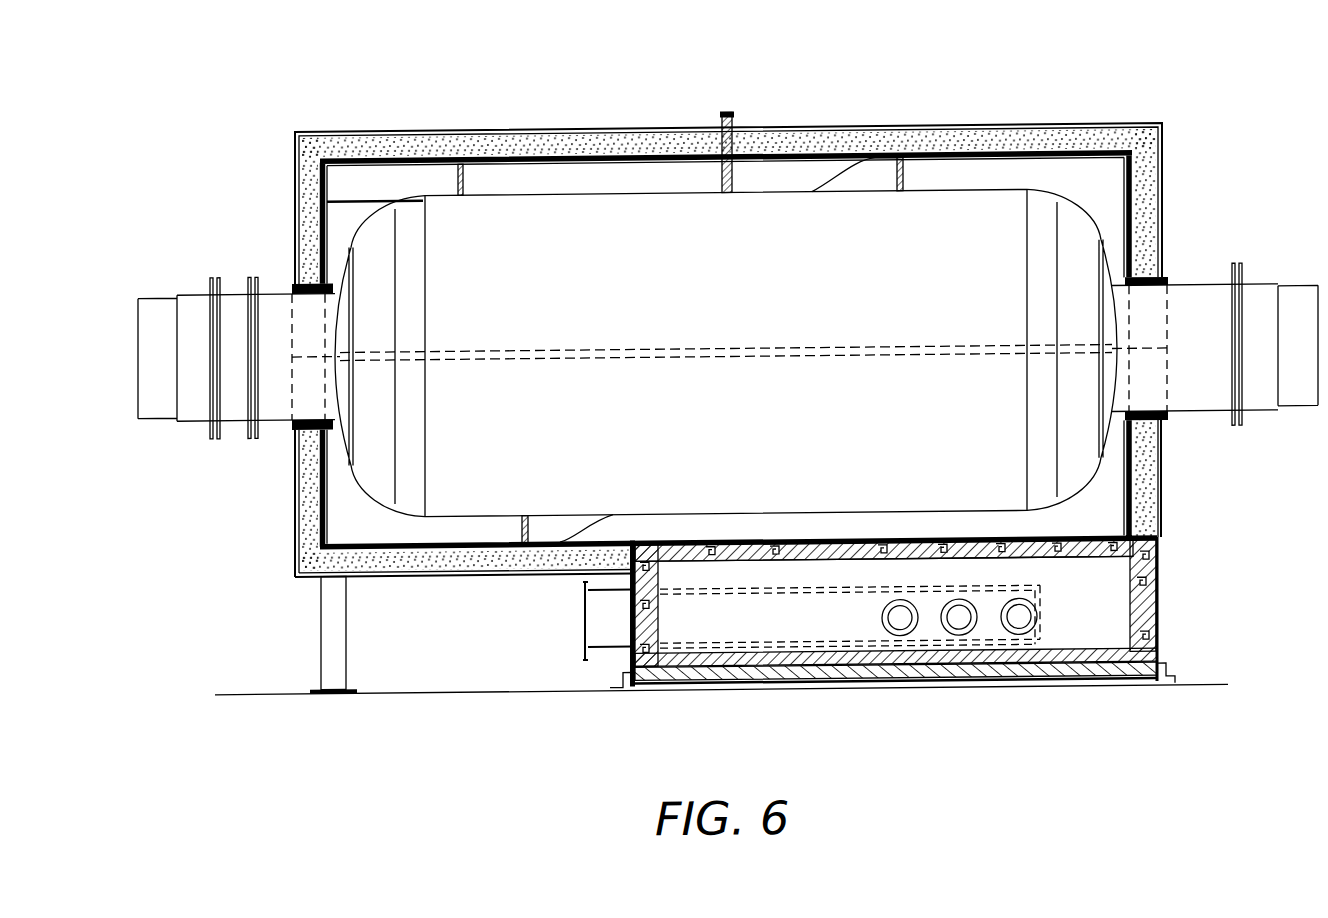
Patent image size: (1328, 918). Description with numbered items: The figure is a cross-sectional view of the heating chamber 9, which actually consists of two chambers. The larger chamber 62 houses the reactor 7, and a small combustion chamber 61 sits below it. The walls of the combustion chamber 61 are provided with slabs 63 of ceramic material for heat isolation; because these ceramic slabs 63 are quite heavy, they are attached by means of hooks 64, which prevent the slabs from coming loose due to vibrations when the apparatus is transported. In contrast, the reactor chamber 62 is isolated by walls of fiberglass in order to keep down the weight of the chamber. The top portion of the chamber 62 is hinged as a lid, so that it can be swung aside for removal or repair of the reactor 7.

The reactor 7 is at (768, 200).
The heating chamber 9 is at (927, 122).
The combustion chamber 61 is at (1072, 645).
The reactor chamber 62 is at (347, 512).
The slabs of ceramic material 63 is at (918, 554).
The hooks 64 is at (772, 553).